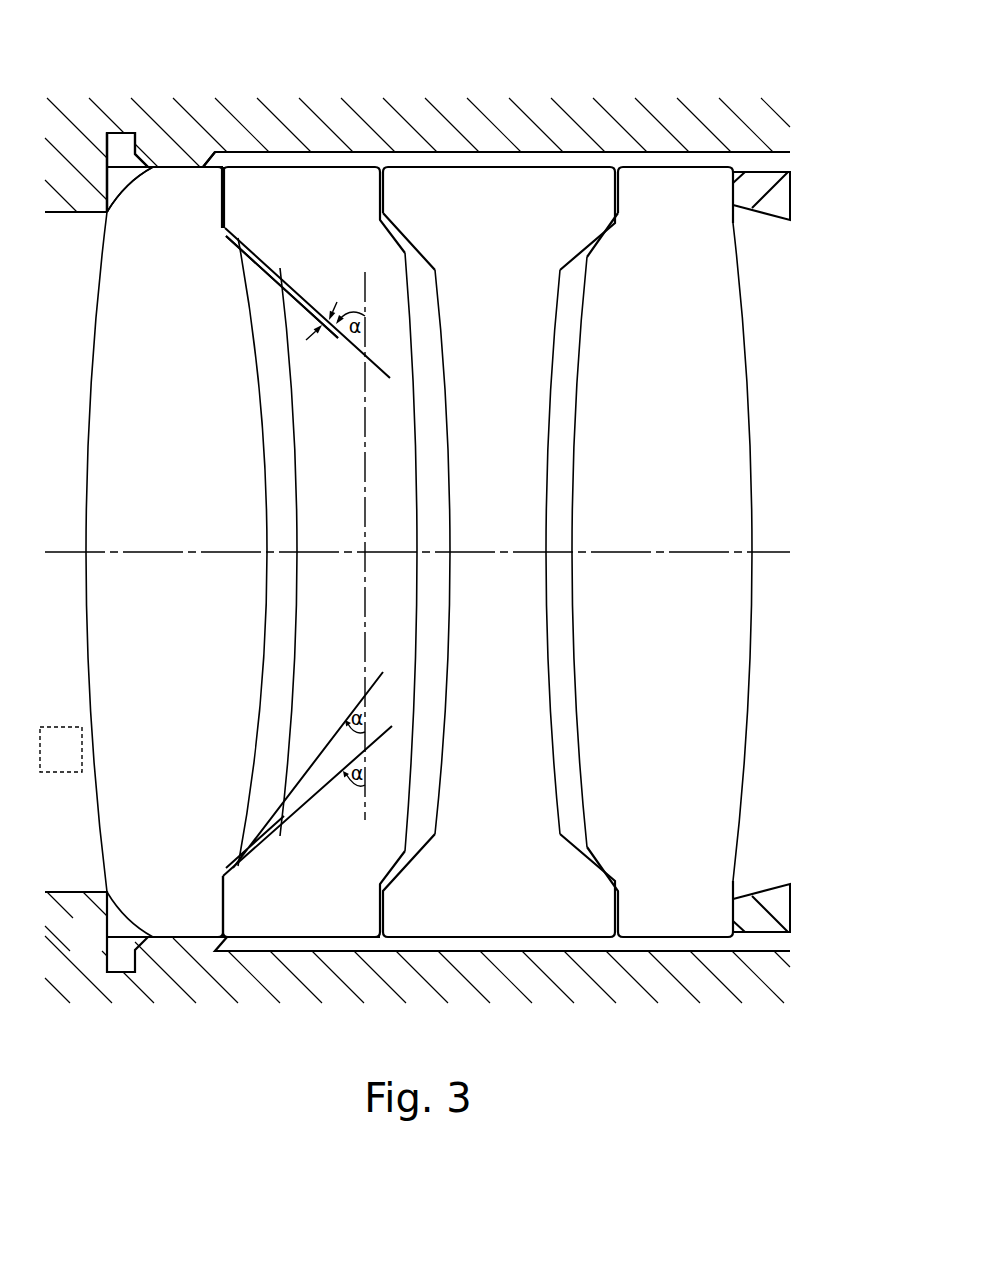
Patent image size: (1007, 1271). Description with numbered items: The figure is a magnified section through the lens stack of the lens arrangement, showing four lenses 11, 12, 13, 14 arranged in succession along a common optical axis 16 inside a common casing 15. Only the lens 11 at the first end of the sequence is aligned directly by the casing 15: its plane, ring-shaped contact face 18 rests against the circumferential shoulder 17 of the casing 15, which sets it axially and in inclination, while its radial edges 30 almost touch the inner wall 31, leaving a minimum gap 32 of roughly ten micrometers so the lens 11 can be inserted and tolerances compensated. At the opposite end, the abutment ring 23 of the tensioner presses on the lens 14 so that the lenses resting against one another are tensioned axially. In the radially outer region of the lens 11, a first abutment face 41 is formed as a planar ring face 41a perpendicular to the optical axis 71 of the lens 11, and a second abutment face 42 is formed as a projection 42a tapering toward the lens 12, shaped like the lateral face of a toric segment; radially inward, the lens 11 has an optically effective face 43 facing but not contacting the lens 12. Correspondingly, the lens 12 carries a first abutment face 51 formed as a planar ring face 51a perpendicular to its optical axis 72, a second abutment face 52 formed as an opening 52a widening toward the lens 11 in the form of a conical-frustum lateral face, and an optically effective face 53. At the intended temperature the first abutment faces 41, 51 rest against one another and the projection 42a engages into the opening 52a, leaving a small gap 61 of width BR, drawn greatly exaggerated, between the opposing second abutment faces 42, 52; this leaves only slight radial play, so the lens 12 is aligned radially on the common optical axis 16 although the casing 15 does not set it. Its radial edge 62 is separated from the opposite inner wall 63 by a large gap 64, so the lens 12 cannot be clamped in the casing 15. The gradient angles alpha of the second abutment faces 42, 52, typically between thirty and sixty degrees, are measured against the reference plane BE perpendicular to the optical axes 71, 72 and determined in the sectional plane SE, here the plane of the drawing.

The lens 11 is at (156, 552).
The lens 12 is at (279, 548).
The lens 13 is at (487, 524).
The lens 14 is at (637, 524).
The common casing 15 is at (77, 933).
The common optical axis 16 is at (87, 552).
The circumferential shoulder 17 is at (99, 190).
The circumferential contact face 18 is at (153, 167).
The abutment ring 23 is at (768, 907).
The radial edges 30 is at (186, 177).
The inner wall 31 is at (179, 158).
The minimum gap 32 is at (155, 168).
The first abutment face 41 is at (177, 250).
The planar ring face 41a is at (214, 203).
The second abutment face 42 is at (262, 552).
The projection 42a is at (233, 255).
The optically effective face 43 is at (267, 497).
The first abutment face 51 is at (245, 144).
The planar ring face 51a is at (233, 197).
The second abutment face 52 is at (296, 549).
The opening 52a is at (246, 225).
The optically effective face 53 is at (307, 497).
The small gap 61 is at (250, 219).
The radial edge 62 is at (302, 926).
The inner wall 63 is at (302, 962).
The large gap 64 is at (338, 945).
The optical axis 71 is at (87, 552).
The optical axis 72 is at (103, 548).
The reference plane BE is at (367, 400).
The width BR is at (323, 311).
The sectional plane SE is at (61, 749).